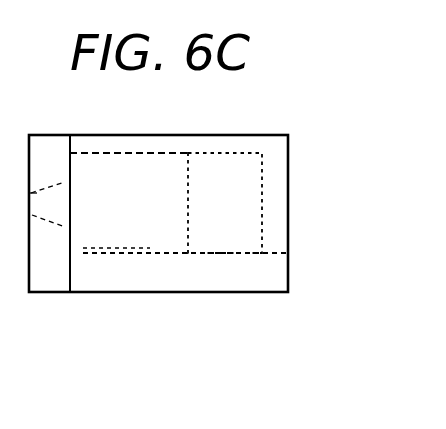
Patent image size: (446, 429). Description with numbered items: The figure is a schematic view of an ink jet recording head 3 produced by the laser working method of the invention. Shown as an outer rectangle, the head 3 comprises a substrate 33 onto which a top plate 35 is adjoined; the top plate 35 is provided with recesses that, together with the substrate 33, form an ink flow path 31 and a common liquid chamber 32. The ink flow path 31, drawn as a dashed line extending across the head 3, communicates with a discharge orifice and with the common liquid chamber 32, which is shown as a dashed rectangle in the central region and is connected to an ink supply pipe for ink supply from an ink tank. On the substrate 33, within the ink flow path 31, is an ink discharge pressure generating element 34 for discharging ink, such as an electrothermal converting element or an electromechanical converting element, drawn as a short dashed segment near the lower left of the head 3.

The circuit board 3 is at (289, 209).
The ink flow path 31 is at (170, 157).
The common liquid chamber 32 is at (215, 250).
The substrate 33 is at (289, 272).
The ink discharge pressure generating element 34 is at (125, 250).
The top plate 35 is at (242, 143).